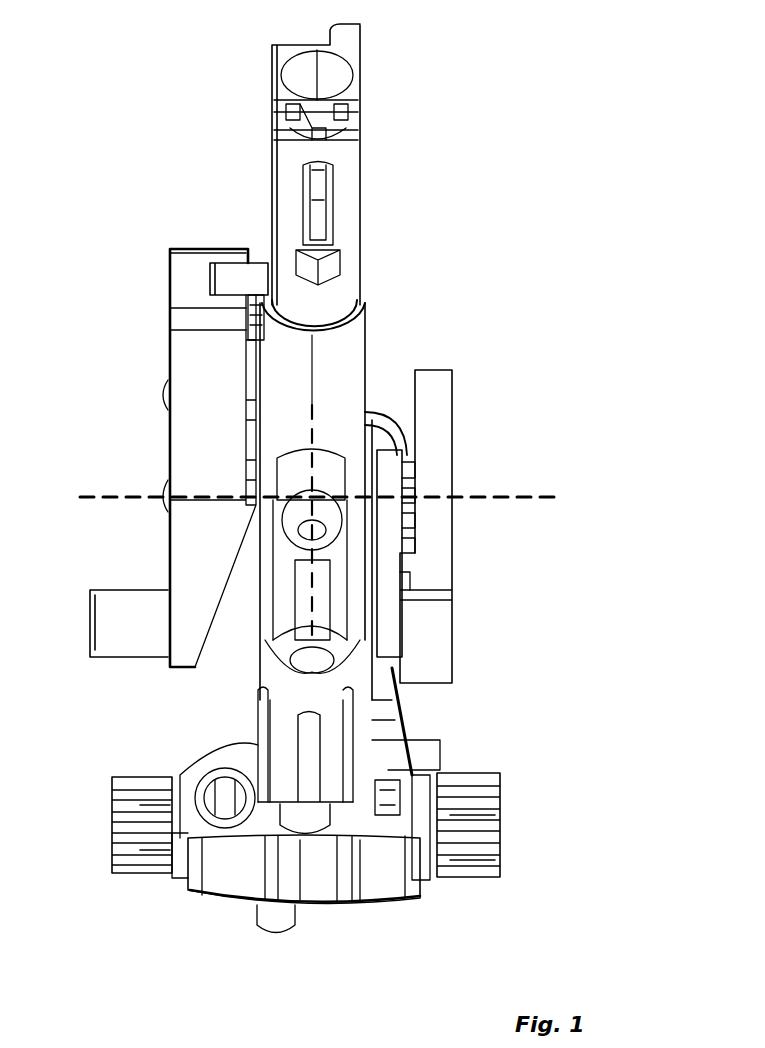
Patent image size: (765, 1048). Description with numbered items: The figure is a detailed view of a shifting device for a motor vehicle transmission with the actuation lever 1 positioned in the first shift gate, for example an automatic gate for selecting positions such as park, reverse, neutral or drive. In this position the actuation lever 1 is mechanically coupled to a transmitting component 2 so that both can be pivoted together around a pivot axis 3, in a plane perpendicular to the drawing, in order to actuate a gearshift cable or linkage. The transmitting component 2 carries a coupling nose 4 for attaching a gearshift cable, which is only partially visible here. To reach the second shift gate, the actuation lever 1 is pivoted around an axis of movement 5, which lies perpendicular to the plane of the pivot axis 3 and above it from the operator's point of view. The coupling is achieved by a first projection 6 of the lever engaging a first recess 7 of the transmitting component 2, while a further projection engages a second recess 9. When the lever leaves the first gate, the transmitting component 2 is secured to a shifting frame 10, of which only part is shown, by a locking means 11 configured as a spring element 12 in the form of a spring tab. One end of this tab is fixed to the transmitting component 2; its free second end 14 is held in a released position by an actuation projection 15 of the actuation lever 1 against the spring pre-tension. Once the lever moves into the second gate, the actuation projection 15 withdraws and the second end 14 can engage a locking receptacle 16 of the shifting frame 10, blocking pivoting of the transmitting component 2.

The actuation lever 1 is at (407, 119).
The transmitting component 2 is at (198, 400).
The pivot axis 3 is at (498, 495).
The coupling nose 4 is at (375, 740).
The axis of movement 5 is at (315, 437).
The first projection 6 is at (245, 278).
The first recess 7 is at (195, 268).
The second recess 9 is at (418, 637).
The shifting frame 10 is at (226, 870).
The locking means 11 is at (443, 748).
The spring element 12 is at (405, 735).
The second end 14 is at (418, 858).
The actuation projection 15 is at (358, 825).
The locking receptacle 16 is at (390, 820).